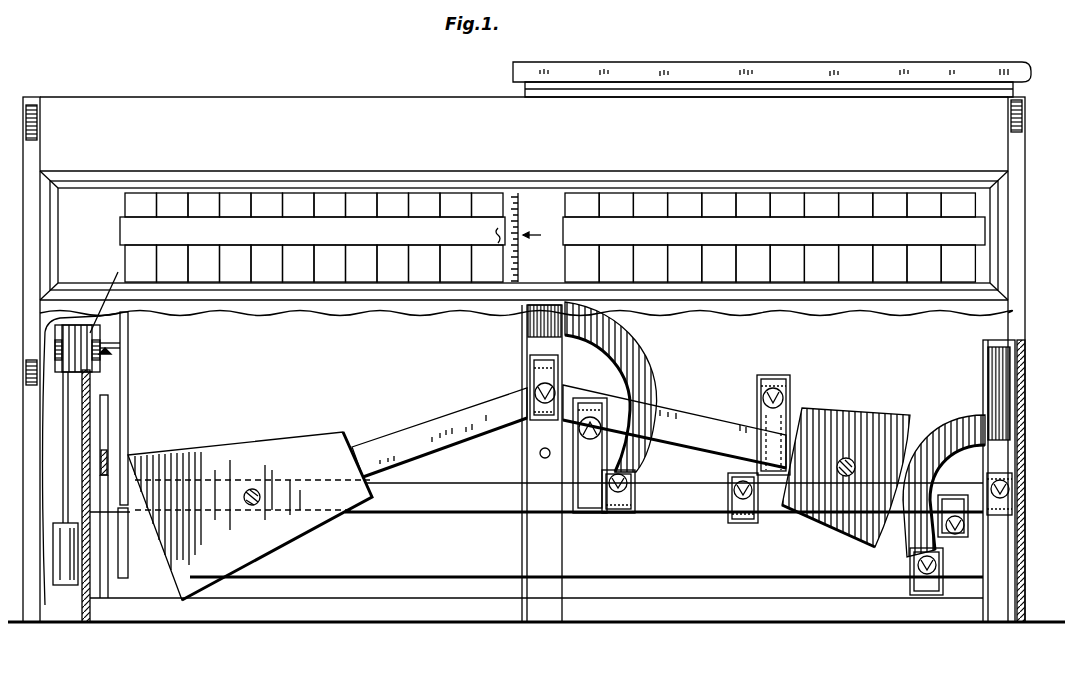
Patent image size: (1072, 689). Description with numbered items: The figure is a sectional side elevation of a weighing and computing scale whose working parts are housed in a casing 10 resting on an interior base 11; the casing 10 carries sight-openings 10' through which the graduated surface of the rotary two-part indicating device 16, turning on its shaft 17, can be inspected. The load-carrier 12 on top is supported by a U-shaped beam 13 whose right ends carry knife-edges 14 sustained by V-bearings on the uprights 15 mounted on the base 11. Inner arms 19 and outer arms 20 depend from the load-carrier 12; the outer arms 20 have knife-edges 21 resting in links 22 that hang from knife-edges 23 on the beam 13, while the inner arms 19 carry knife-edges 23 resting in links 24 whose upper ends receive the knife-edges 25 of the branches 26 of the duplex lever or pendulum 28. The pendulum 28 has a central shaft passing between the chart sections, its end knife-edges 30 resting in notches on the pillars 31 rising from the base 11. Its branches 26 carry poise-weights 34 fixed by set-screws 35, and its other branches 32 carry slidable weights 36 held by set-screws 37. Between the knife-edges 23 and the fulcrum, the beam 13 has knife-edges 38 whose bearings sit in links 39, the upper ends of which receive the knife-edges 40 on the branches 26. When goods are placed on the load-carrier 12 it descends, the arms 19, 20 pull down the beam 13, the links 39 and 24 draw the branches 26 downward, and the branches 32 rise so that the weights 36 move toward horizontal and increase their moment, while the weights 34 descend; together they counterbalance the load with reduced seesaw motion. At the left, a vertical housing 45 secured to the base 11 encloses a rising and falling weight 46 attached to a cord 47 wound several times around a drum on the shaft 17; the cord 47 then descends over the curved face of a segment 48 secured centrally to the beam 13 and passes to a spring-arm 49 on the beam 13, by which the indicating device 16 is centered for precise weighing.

The casing 10 is at (536, 359).
The sight-openings 10' is at (552, 211).
The base 11 is at (405, 619).
The load-carrier 12 is at (718, 64).
The beam 13 is at (664, 497).
The knife-edges 14 is at (1000, 478).
The uprights 15 is at (999, 481).
The indicating device 16 is at (130, 371).
The shaft 17 is at (118, 352).
The inner arms 19 is at (620, 358).
The outer arms 20 is at (995, 383).
The knife-edges 21 is at (937, 565).
The links 22 is at (912, 585).
The knife-edges 23 is at (632, 480).
The links 24 is at (620, 513).
The knife-edges 25 is at (590, 440).
The branches 26 is at (674, 426).
The duplex lever 28 is at (520, 387).
The knife-edges 30 is at (538, 405).
The pillars 31 is at (542, 463).
The branches 32 is at (439, 432).
The poise-weights 34 is at (846, 477).
The set-screws 35 is at (851, 478).
The weights 36 is at (343, 432).
The set-screws 37 is at (256, 493).
The knife-edges 38 is at (735, 510).
The links 39 is at (746, 512).
The knife-edges 40 is at (778, 396).
The weight 45 is at (109, 543).
The weight 46 is at (65, 490).
The cord 47 is at (105, 296).
The segment 48 is at (105, 445).
The rod 49 is at (70, 415).